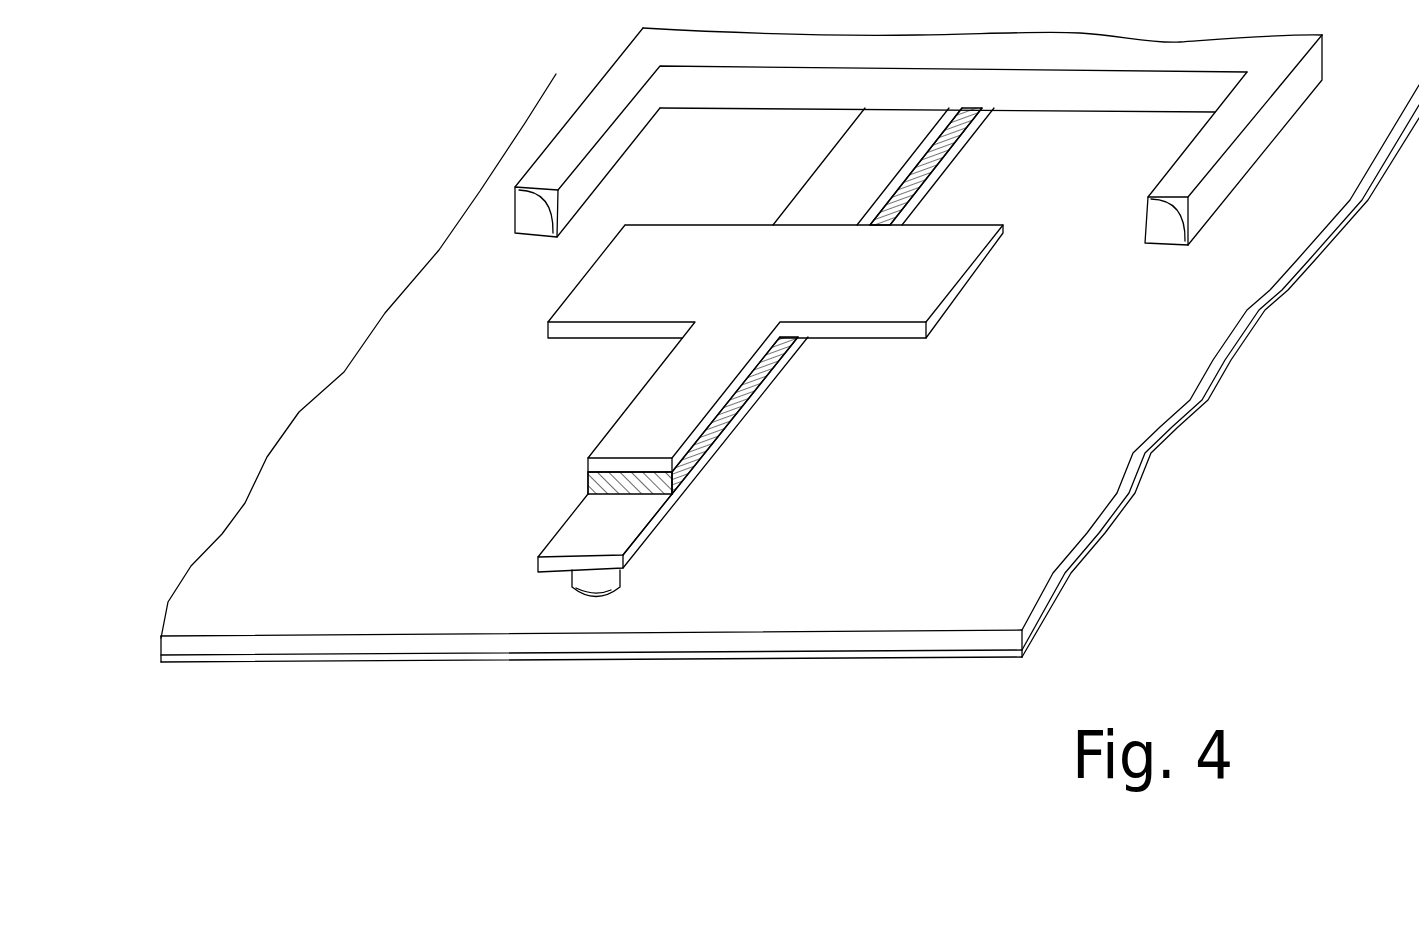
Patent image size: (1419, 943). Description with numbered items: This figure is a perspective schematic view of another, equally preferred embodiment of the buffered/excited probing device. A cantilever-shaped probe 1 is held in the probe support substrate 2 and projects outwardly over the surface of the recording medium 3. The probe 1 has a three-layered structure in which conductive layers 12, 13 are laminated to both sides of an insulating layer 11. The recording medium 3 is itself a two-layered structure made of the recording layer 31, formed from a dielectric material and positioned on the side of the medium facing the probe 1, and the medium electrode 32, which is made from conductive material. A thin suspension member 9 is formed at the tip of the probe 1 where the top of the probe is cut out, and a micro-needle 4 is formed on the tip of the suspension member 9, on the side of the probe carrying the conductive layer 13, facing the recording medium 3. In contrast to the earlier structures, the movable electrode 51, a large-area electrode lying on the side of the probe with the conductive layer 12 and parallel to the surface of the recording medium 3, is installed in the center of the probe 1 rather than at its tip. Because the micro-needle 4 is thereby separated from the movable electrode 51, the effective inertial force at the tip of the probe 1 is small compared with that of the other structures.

The probe 1 is at (602, 385).
The probe support substrate 2 is at (1223, 187).
The recording medium 3 is at (790, 368).
The micro-needle 4 is at (603, 600).
The suspension member 9 is at (693, 505).
The insulating layer 11 is at (782, 358).
The conductive layer 12 is at (875, 160).
The conductive layer 13 is at (738, 427).
The recording layer 31 is at (1143, 410).
The medium electrode 32 is at (1100, 541).
The movable electrode 51 is at (933, 272).